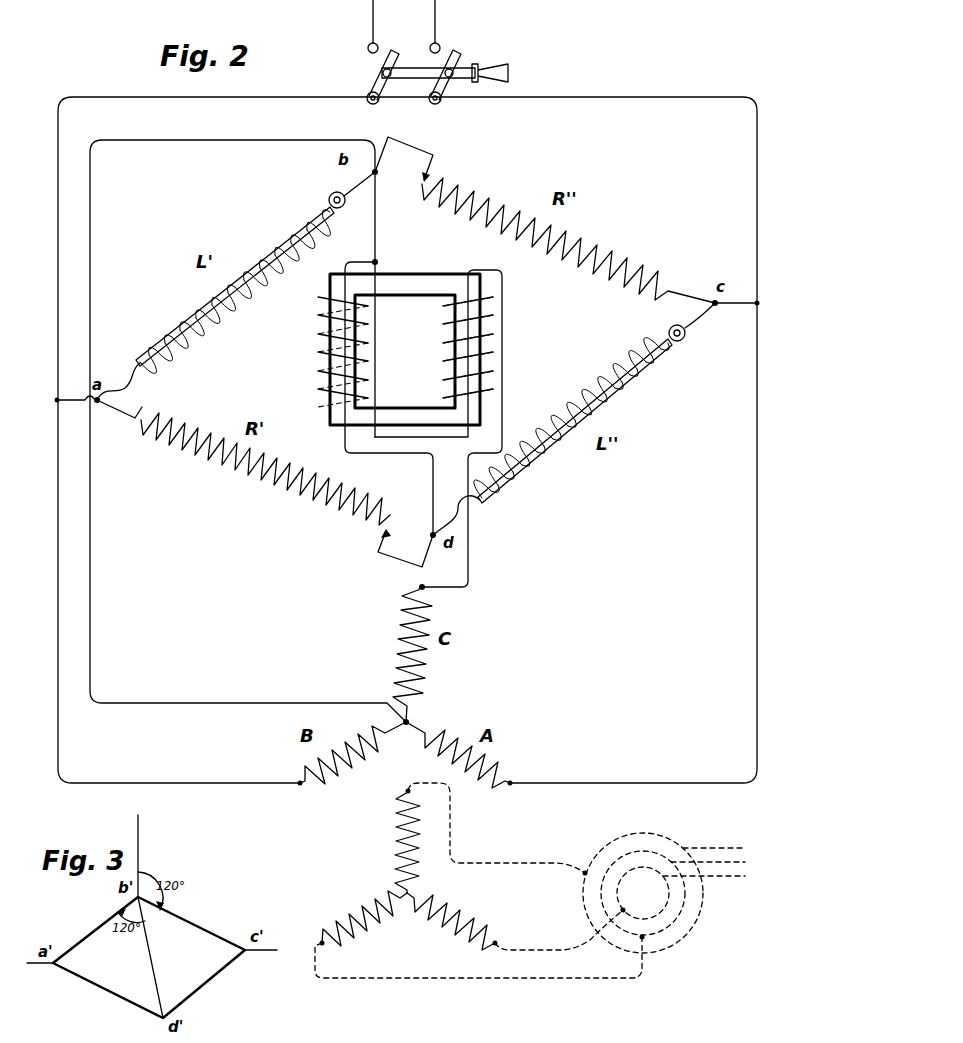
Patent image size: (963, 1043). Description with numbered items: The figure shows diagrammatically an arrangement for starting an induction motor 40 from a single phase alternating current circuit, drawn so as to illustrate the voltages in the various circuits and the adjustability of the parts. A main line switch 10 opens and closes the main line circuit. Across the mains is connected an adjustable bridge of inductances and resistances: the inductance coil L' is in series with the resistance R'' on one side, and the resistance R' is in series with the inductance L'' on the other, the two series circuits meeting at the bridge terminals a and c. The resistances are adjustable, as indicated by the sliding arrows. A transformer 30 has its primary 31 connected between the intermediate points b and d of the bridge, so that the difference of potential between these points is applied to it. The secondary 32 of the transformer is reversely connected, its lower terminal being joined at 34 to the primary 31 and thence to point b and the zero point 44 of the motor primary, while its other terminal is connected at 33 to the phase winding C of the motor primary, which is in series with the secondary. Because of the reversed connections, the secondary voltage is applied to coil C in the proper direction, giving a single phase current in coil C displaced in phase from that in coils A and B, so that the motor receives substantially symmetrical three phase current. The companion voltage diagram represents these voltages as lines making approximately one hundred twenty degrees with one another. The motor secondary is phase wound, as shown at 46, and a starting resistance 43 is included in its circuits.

In FIG. 2, the main line switch 10 is at (370, 68).
In FIG. 2, the transformer 30 is at (422, 284).
In FIG. 2, the primary coil of the transformer 31 is at (318, 350).
In FIG. 2, the secondary coil of the transformer 32 is at (490, 363).
In FIG. 2, the secondary terminal connection to phase winding C 33 is at (424, 586).
In FIG. 3, the secondary terminal connection to phase winding C 33 is at (150, 856).
In FIG. 2, the secondary-to-primary connection 34 is at (376, 261).
In FIG. 2, the induction motor 40 is at (248, 431).
In FIG. 2, the starting resistance 43 is at (664, 893).
In FIG. 2, the zero point of the motor primary 44 is at (406, 722).
In FIG. 2, the phase wound secondary of the motor 46 is at (463, 898).